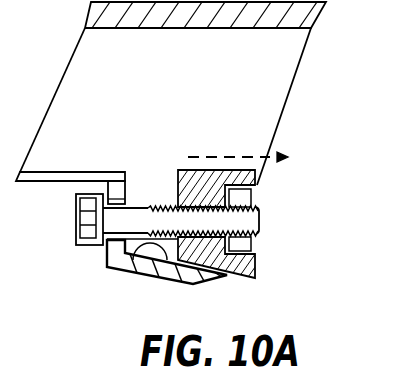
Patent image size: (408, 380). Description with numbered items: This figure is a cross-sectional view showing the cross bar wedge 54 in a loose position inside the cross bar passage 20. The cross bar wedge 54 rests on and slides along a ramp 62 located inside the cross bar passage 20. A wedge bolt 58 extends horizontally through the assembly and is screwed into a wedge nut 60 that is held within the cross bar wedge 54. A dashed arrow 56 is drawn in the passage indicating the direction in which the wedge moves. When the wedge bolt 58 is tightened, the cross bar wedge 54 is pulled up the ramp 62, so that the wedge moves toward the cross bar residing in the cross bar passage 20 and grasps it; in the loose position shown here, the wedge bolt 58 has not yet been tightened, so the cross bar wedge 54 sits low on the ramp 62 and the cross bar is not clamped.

The cross bar passage 20 is at (232, 76).
The cross bar wedge 54 is at (202, 192).
The adjustment direction 56 is at (209, 157).
The wedge bolt 58 is at (120, 237).
The wedge nut 60 is at (242, 198).
The ramp 62 is at (131, 248).